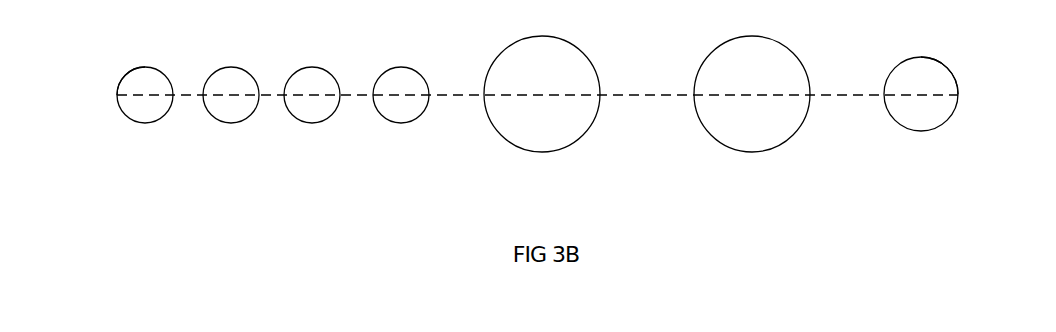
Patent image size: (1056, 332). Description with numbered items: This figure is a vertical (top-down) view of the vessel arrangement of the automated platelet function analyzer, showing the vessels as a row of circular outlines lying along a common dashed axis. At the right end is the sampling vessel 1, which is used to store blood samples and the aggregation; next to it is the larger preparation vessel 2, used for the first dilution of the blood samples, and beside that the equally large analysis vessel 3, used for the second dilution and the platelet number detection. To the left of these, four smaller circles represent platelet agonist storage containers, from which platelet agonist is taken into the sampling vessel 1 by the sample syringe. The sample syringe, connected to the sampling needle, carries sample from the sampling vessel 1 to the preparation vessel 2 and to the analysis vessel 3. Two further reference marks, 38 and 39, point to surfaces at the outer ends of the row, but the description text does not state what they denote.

The sampling vessel 1 is at (900, 117).
The preparation vessel 2 is at (768, 134).
The analysis vessel 3 is at (558, 134).
The surface of lens 1 38 is at (957, 94).
The surface of lens element 10 39 is at (118, 95).